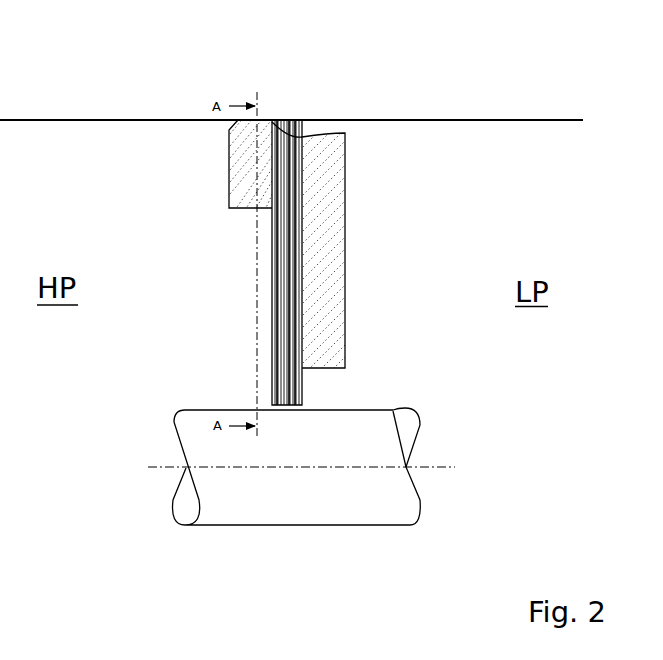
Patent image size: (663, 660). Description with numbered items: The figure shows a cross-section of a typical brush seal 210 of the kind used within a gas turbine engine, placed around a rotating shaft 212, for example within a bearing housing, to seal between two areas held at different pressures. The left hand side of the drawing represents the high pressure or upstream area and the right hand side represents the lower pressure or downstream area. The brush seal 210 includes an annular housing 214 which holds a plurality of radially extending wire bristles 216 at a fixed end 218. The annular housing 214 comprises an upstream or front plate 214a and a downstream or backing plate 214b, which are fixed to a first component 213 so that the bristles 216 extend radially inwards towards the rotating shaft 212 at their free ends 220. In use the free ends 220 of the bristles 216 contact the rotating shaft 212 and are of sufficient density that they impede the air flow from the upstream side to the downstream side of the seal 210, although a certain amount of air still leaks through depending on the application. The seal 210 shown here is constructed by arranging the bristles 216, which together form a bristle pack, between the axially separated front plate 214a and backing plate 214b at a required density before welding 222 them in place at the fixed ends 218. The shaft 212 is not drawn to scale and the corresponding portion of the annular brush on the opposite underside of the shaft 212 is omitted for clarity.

The brush seal 210 is at (406, 67).
The rotating shaft 212 is at (313, 507).
The first component 213 is at (157, 72).
The annular housing 214 is at (279, 240).
The front plate 214a is at (238, 200).
The backing plate 214b is at (323, 297).
The wire bristles 216 is at (286, 332).
The fixed end 218 is at (287, 145).
The free ends 220 is at (297, 393).
The welding 222 is at (320, 128).